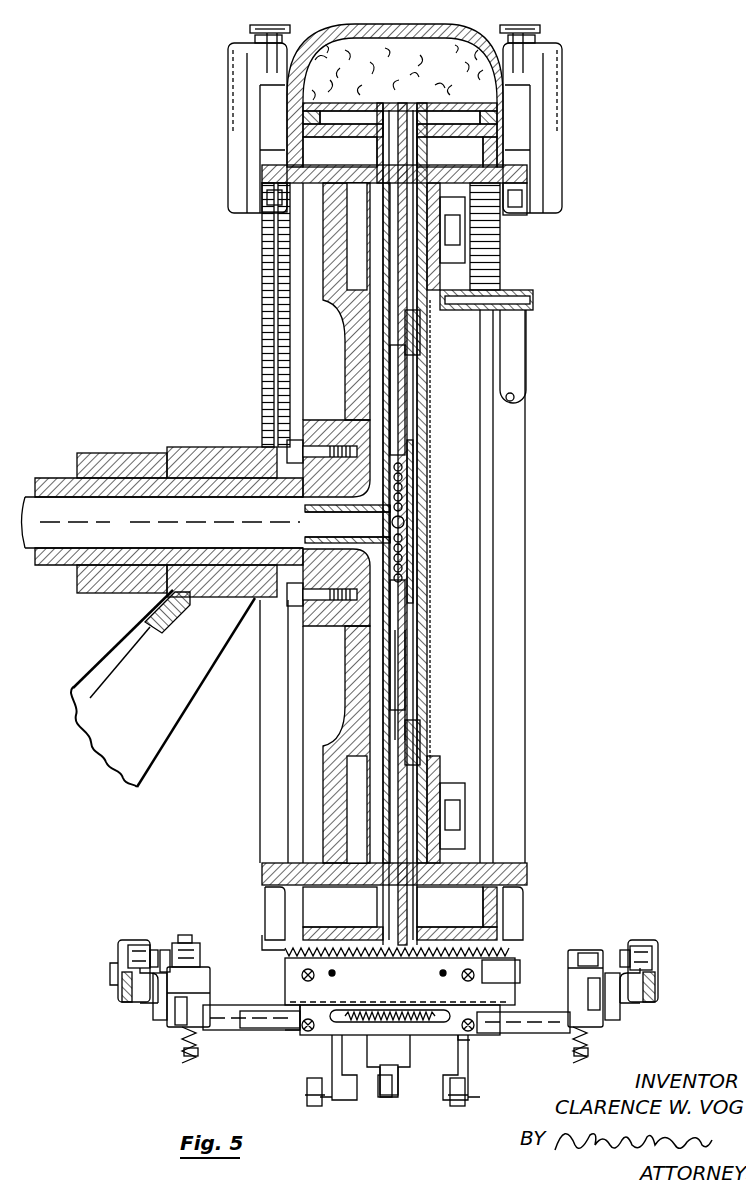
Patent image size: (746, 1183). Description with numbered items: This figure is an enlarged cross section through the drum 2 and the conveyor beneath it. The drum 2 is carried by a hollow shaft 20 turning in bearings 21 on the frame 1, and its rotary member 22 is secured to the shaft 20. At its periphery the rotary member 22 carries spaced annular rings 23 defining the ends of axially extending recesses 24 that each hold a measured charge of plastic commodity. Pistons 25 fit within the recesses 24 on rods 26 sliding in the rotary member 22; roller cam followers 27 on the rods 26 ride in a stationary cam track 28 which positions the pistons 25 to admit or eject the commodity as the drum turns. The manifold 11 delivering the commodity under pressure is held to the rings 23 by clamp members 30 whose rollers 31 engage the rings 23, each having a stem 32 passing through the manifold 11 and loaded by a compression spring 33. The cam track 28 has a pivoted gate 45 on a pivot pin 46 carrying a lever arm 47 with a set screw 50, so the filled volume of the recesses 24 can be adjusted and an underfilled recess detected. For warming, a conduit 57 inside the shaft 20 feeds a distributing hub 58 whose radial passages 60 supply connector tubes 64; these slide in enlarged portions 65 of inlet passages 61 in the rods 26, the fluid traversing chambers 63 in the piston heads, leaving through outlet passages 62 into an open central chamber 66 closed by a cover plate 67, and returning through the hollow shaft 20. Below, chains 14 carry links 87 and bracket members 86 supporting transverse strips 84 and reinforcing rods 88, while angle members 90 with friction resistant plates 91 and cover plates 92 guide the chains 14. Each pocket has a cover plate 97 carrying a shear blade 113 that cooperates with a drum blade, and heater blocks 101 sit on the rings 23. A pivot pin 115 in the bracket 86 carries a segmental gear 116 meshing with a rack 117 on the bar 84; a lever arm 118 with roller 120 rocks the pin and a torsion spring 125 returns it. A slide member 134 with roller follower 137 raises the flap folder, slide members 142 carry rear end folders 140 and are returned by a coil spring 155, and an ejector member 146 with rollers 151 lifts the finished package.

The frame 1 is at (80, 685).
The drum 2 is at (320, 352).
The manifold or header 11 is at (395, 95).
The chains 14 is at (120, 950).
The shaft 20 is at (50, 478).
The bearings 21 is at (205, 450).
The rotary member 22 is at (355, 400).
The annular rings 23 is at (270, 168).
The recesses or pockets 24 is at (397, 72).
The pistons or plungers 25 is at (358, 935).
The rods 26 is at (378, 152).
The roller cam followers 27 is at (470, 255).
The stationary cam track 28 is at (465, 225).
The hanger or clamp members 30 is at (237, 132).
The rollers 31 is at (268, 222).
The stem 32 is at (250, 48).
The compression springs 33 is at (250, 27).
The gate 45 is at (455, 312).
The pivot pin 46 is at (535, 300).
The lever arm 47 is at (515, 375).
The set screw 50 is at (515, 400).
The pipe or conduit 57 is at (87, 535).
The distributing hub 58 is at (420, 490).
The radially extending passages 60 is at (415, 543).
The inlet passages 61 is at (415, 152).
The outlet passages 62 is at (345, 208).
The chambers 63 is at (450, 935).
The connector tubes 64 is at (420, 430).
The enlarged portions 65 is at (422, 370).
The open portion 66 is at (380, 650).
The cover plate 67 is at (430, 614).
The transverse supporting strips 84 is at (245, 1035).
The bracket members 86 is at (175, 1020).
The links 87 is at (160, 1000).
The stiffening and reinforcing rods 88 is at (251, 1035).
The angle members 90 is at (125, 990).
The friction resistant plates 91 is at (127, 963).
The cover plates 92 is at (130, 940).
The cover plate member 97 is at (310, 1030).
The heater blocks 101 is at (268, 915).
The shear blade 113 is at (518, 960).
The pivot pins 115 is at (190, 1075).
The segmental gear 116 is at (255, 990).
The rack member 117 is at (270, 940).
The lever arms 118 is at (183, 943).
The rollers 120 is at (160, 945).
The torsion spring 125 is at (190, 1060).
The slide member 134 is at (385, 1067).
The roller follower 137 is at (395, 1100).
The rear end folders 140 is at (305, 985).
The slide members 142 is at (455, 1040).
The member 146 is at (330, 1100).
The rollers 151 is at (312, 1105).
The coil spring 155 is at (375, 1012).